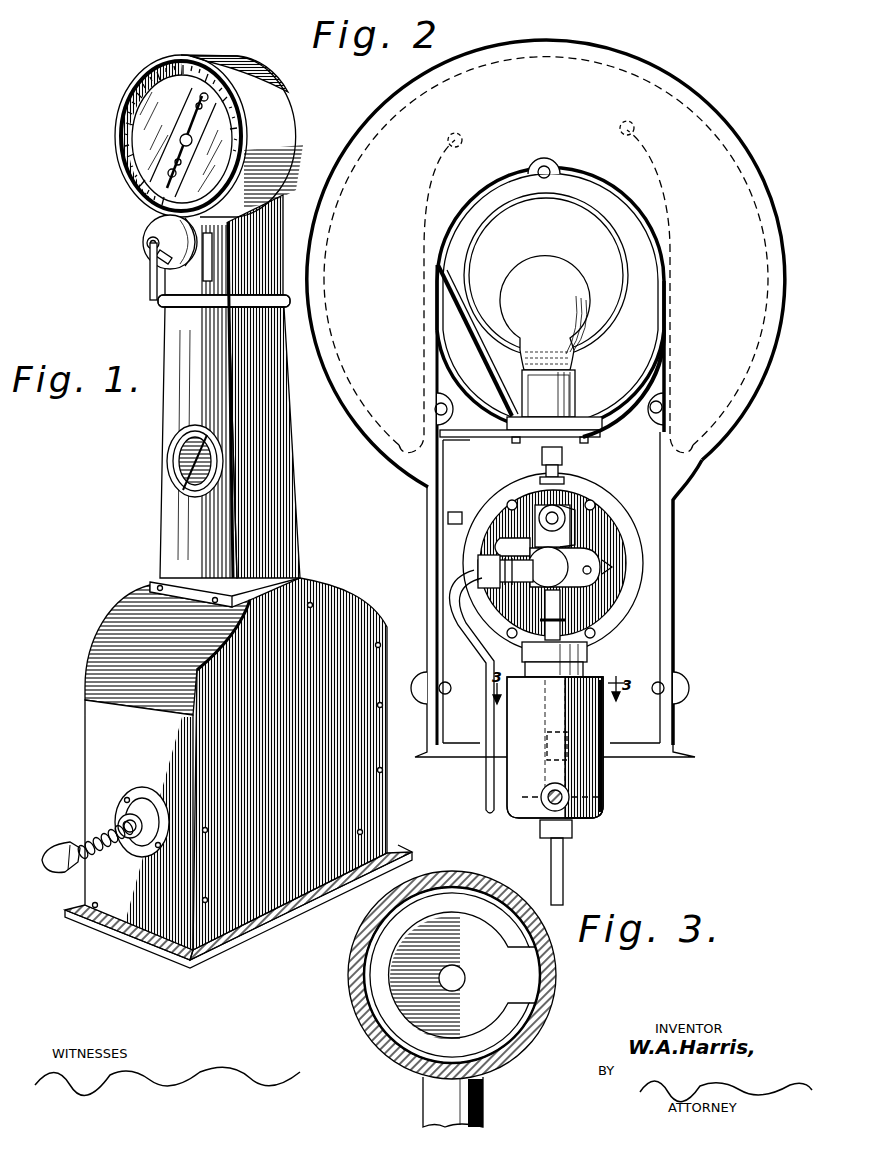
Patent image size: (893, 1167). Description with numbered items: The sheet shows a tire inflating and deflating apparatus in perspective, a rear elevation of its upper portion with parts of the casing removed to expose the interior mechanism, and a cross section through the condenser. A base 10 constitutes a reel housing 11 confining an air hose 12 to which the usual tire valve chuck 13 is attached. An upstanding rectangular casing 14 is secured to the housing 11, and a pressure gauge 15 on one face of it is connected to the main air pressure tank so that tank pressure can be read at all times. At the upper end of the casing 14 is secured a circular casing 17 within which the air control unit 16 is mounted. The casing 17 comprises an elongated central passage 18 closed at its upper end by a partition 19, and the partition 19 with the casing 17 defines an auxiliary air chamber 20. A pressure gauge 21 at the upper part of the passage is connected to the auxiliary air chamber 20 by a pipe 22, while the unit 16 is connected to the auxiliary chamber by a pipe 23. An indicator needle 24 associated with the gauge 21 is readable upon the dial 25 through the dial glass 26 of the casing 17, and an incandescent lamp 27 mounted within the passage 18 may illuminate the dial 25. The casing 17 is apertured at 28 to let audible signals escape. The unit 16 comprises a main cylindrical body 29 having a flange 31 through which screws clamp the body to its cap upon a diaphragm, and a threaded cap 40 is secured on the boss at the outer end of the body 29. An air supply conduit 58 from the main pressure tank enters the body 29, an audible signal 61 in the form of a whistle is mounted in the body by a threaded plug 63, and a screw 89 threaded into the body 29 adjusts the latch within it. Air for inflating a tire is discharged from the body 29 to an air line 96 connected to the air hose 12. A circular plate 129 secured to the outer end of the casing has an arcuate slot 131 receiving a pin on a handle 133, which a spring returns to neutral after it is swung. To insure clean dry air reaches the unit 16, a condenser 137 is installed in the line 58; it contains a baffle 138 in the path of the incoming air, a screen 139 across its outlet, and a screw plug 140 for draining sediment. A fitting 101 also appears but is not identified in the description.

In FIG. 1, the base 10 is at (266, 928).
In FIG. 1, the reel housing 11 is at (112, 652).
In FIG. 1, the air hose 12 is at (118, 822).
In FIG. 1, the tire valve chuck 13 is at (58, 856).
In FIG. 1, the upstanding rectangular casing 14 is at (270, 470).
In FIG. 1, the pressure gauge 15 is at (170, 452).
In FIG. 2, the air control unit 16 is at (640, 519).
In FIG. 1, the circular casing 17 is at (284, 100).
In FIG. 2, the circular casing 17 is at (706, 133).
In FIG. 2, the elongated central passage 18 is at (652, 458).
In FIG. 2, the partition 19 is at (592, 166).
In FIG. 2, the auxiliary air chamber 20 is at (740, 158).
In FIG. 2, the pressure gauge 21 is at (612, 268).
In FIG. 2, the pipe 22 is at (472, 347).
In FIG. 2, the pipe 23 is at (612, 392).
In FIG. 1, the indicator needle 24 is at (172, 170).
In FIG. 1, the dial 25 is at (262, 160).
In FIG. 1, the dial glass 26 is at (152, 120).
In FIG. 2, the incandescent lamp 27 is at (549, 276).
In FIG. 1, the aperture 28 is at (205, 284).
In FIG. 2, the main cylindrical body 29 is at (572, 623).
In FIG. 2, the flange 31 is at (633, 593).
In FIG. 2, the cap 40 is at (562, 575).
In FIG. 2, the air supply conduit 58 is at (560, 613).
In FIG. 2, the audible signal 61 is at (548, 515).
In FIG. 2, the threaded plug 63 is at (560, 514).
In FIG. 2, the screw 89 is at (592, 566).
In FIG. 2, the air line 96 is at (488, 773).
In FIG. 2, the fitting 101 is at (563, 471).
In FIG. 1, the circular plate 129 is at (147, 228).
In FIG. 1, the arcuate slot 131 is at (165, 255).
In FIG. 1, the handle 133 is at (150, 270).
In FIG. 2, the condenser 137 is at (606, 788).
In FIG. 3, the condenser 137 is at (557, 982).
In FIG. 2, the baffle 138 is at (603, 726).
In FIG. 3, the baffle 138 is at (412, 1018).
In FIG. 2, the screen 139 is at (590, 666).
In FIG. 2, the screw plug 140 is at (548, 810).
In FIG. 3, the screw plug 140 is at (486, 1097).